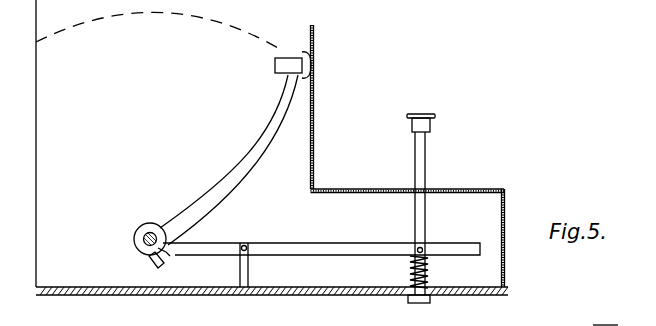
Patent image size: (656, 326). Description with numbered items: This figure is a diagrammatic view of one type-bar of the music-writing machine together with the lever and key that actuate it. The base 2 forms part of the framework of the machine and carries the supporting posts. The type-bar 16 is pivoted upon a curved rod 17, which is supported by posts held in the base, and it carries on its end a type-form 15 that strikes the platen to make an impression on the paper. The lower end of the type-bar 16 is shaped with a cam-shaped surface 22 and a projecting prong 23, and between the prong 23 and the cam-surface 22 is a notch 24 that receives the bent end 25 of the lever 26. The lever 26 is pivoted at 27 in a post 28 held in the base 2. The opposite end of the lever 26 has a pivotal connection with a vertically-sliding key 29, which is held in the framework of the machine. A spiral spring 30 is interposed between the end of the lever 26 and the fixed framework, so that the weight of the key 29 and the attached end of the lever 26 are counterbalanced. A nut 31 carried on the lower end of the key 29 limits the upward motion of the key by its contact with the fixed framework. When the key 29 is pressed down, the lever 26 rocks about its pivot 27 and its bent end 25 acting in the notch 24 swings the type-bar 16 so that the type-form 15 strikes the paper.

The base 2 is at (488, 291).
The type-form 15 is at (275, 65).
The type-bar 16 is at (214, 200).
The curved rod 17 is at (143, 239).
The cam-shaped surface 22 is at (160, 228).
The projecting prong 23 is at (148, 262).
The notch 24 is at (112, 259).
The bent end of the lever 25 is at (167, 255).
The lever 26 is at (328, 247).
The pivot 27 is at (247, 245).
The post 28 is at (250, 268).
The vertically-sliding key 29 is at (427, 156).
The spiral spring 30 is at (430, 270).
The nut 31 is at (409, 298).